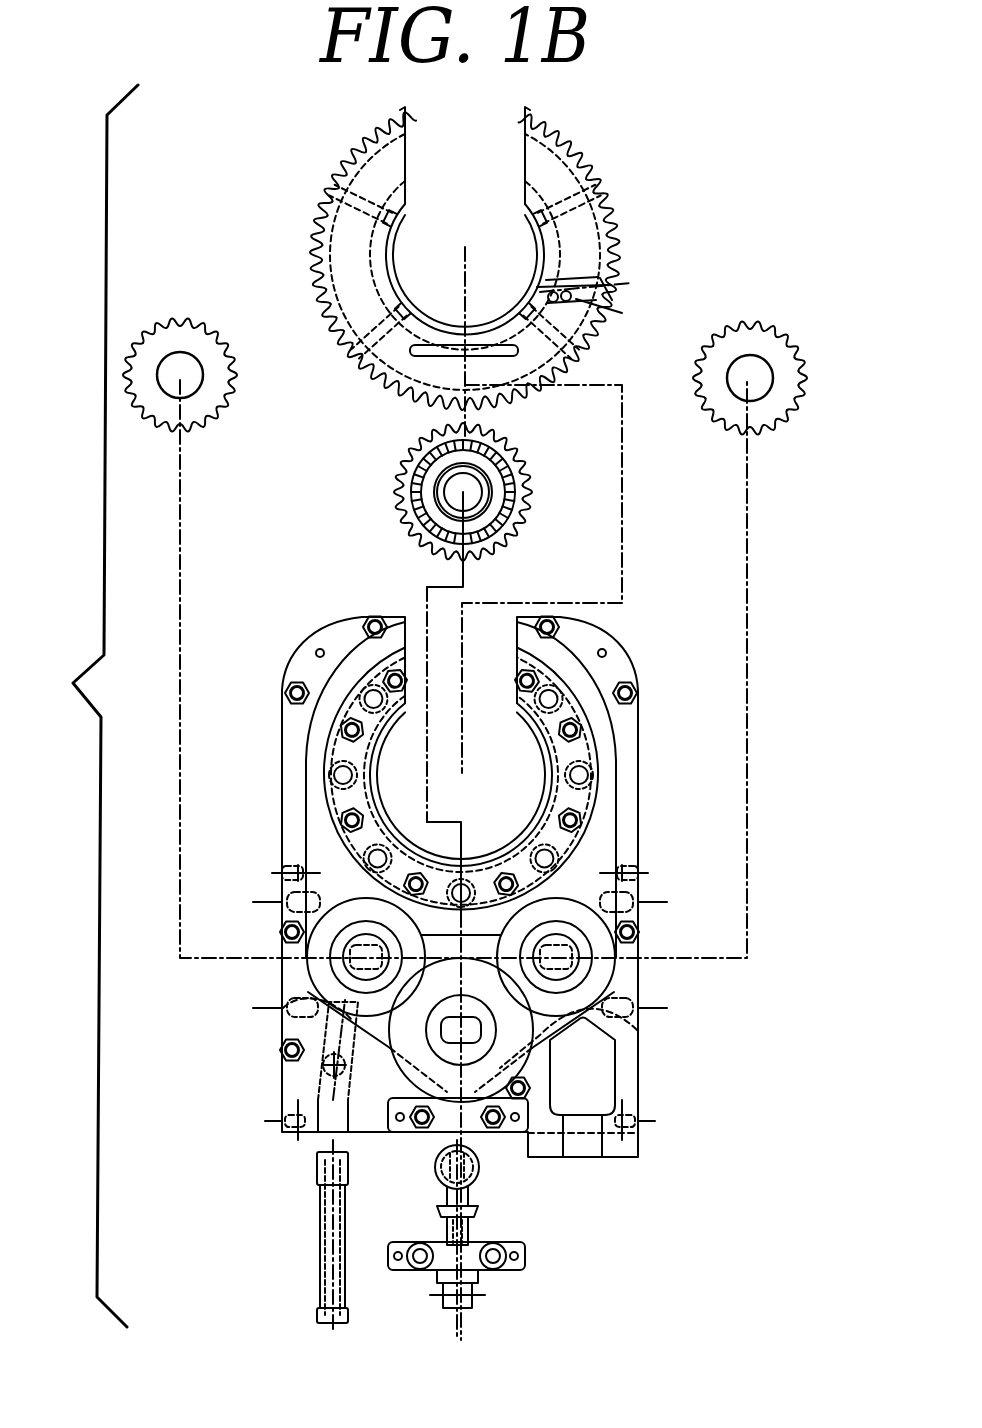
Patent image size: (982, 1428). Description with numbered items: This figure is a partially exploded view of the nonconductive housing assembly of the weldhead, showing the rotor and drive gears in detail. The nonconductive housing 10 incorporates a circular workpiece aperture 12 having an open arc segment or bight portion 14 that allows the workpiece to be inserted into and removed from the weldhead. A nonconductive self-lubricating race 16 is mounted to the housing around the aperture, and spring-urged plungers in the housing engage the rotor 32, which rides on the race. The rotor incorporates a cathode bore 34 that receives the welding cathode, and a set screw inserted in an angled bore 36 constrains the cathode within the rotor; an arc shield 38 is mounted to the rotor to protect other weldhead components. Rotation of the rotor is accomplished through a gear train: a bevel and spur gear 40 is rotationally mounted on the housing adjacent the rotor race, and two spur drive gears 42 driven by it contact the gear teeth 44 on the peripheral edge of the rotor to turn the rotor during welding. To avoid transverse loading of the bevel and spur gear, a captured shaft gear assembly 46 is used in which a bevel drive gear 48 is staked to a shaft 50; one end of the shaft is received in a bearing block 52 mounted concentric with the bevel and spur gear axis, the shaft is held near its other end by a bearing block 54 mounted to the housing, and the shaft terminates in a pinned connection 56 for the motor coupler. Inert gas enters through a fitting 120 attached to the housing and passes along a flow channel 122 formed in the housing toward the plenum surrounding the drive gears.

The nonconductive housing 10 is at (638, 812).
The circular workpiece aperture 12 is at (525, 735).
The open arc segment or bight portion 14 is at (513, 668).
The nonconductive self-lubricating race 16 is at (595, 737).
The rotor 32 is at (563, 136).
The cathode bore 34 is at (598, 315).
The angled bore 36 is at (612, 282).
The arc shield 38 is at (393, 253).
The bevel and spur gear 40 is at (395, 492).
The spur drive gears 42 is at (180, 320).
The gear teeth 44 is at (358, 150).
The captured shaft gear assembly 46 is at (506, 1253).
The bevel drive gear 48 is at (478, 1208).
The shaft 50 is at (470, 1195).
The bearing block 52 is at (478, 1162).
The bearing block 54 is at (525, 1252).
The pinned connection 56 is at (470, 1308).
The fitting 120 is at (317, 1240).
The flow channel 122 is at (327, 1037).